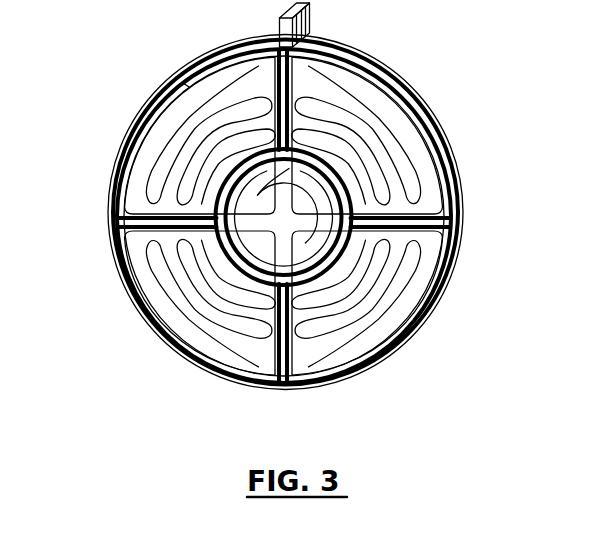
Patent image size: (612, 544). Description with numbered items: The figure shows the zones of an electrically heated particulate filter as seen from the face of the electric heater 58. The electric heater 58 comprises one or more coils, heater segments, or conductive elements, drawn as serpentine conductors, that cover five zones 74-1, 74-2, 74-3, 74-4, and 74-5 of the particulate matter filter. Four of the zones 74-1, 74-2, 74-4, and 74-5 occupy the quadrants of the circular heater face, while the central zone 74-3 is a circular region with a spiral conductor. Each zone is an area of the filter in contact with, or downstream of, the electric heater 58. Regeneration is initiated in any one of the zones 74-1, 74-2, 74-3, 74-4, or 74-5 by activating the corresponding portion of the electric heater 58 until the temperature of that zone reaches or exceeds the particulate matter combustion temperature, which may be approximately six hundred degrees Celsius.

The electric heater 58 is at (400, 75).
The zone 74-1 is at (149, 178).
The zone 74-2 is at (403, 185).
The zone 74-3 is at (305, 243).
The zone 74-4 is at (155, 272).
The zone 74-5 is at (341, 322).